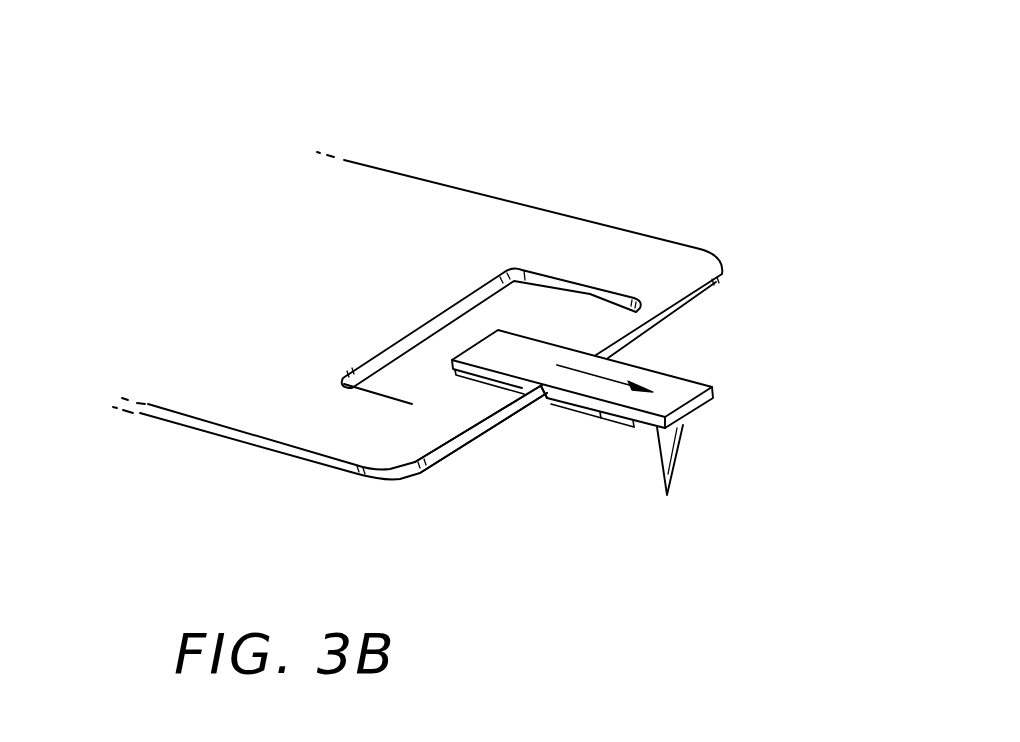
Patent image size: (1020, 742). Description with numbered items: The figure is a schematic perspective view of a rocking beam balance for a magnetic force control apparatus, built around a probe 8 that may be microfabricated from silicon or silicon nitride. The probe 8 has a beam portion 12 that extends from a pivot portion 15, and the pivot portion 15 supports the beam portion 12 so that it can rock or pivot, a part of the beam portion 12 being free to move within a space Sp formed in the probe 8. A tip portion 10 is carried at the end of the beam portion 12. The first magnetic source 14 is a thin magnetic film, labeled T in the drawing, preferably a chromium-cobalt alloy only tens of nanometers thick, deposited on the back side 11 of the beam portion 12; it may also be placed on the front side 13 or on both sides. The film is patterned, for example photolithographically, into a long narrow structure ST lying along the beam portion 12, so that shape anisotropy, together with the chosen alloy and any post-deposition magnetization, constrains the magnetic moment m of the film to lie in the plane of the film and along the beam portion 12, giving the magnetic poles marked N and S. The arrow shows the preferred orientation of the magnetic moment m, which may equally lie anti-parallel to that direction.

The probe 8 is at (627, 132).
The pivot portion 15 is at (623, 326).
The space Sp is at (540, 318).
The beam portion 12 is at (714, 399).
The magnetic moment m is at (605, 372).
The first magnetic source 14 is at (600, 406).
The back side 11 is at (628, 418).
The front side 13 is at (563, 402).
The structure ST is at (546, 397).
The tip portion 10 is at (684, 438).